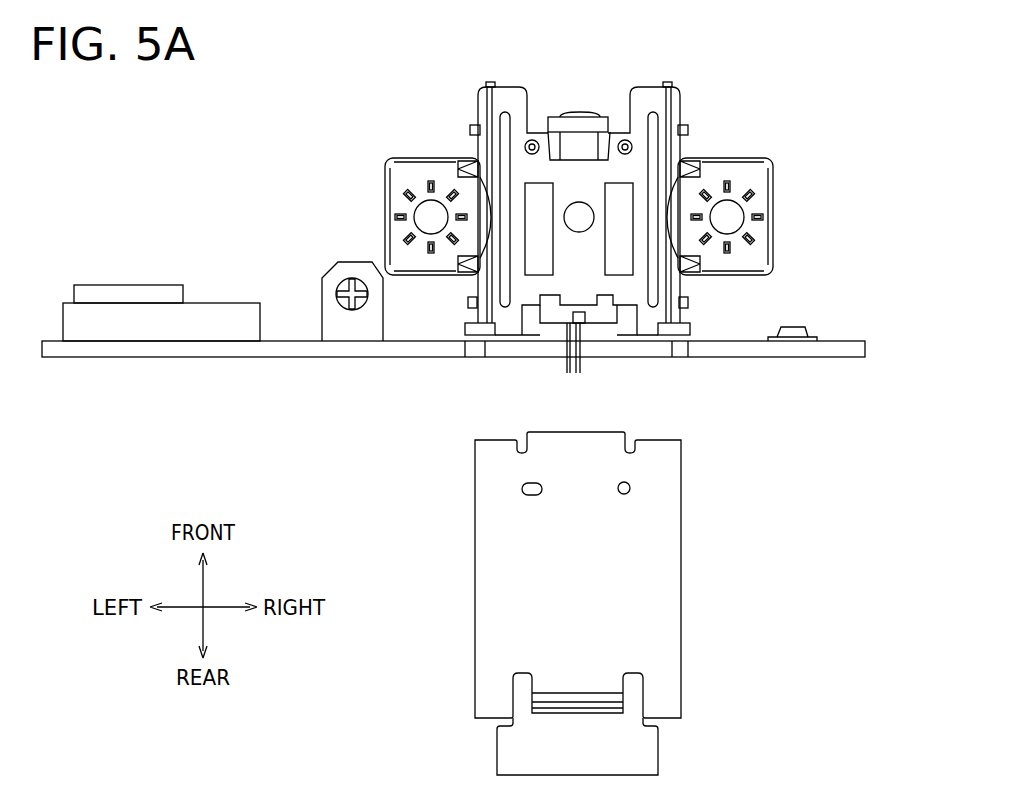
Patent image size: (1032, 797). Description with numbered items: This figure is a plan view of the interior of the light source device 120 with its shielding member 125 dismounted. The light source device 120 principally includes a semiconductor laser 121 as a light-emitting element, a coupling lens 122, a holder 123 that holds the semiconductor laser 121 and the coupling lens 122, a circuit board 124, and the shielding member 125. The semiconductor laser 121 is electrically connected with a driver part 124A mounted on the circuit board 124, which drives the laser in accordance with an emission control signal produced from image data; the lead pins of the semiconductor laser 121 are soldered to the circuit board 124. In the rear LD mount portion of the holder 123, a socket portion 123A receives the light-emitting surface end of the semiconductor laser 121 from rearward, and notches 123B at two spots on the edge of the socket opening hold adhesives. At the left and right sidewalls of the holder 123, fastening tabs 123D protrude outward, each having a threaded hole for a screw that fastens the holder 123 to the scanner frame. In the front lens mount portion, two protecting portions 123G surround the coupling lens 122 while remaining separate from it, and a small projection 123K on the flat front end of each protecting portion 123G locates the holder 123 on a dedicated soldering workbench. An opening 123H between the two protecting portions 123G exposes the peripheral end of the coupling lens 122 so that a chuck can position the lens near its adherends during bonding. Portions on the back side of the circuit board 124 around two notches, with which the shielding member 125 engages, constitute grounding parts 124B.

The light source device 120 is at (245, 160).
The semiconductor laser 121 is at (550, 325).
The coupling lens 122 is at (588, 112).
The holder 123 is at (695, 78).
The socket portion 123A is at (607, 318).
The notches 123B is at (580, 323).
The fastening tabs 123D is at (405, 190).
The protecting portions 123G is at (485, 100).
The opening 123H is at (560, 100).
The small projection 123K is at (489, 83).
The circuit board 124 is at (285, 345).
The driver part 124A is at (798, 327).
The grounding parts 124B is at (480, 357).
The shielding member 125 is at (668, 550).